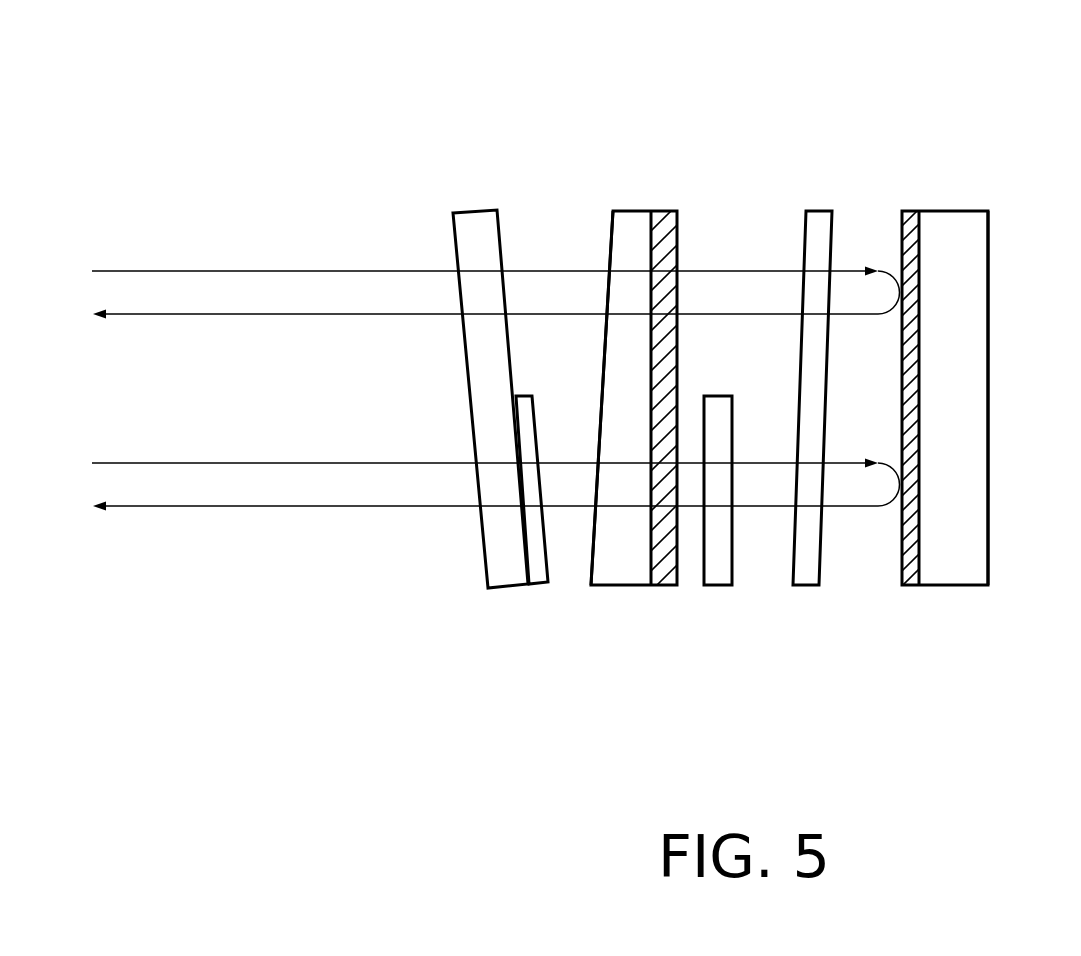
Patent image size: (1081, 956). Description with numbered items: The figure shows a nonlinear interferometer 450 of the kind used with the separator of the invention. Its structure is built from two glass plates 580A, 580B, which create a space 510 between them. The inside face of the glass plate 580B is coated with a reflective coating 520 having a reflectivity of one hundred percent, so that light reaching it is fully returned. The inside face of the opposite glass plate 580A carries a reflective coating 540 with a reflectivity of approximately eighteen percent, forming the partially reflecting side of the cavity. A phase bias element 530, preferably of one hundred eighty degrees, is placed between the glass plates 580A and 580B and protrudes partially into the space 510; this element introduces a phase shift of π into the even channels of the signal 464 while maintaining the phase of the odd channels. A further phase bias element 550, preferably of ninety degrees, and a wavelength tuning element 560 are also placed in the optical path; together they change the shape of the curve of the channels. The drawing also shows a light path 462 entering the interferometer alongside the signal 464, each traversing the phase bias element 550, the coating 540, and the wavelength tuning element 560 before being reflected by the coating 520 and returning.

The nonlinear interferometer 450 is at (812, 46).
The first optical beam 462 is at (197, 270).
The signal 464 is at (197, 463).
The space 510 is at (867, 390).
The reflective coating 520 is at (911, 196).
The phase bias element 530 is at (718, 602).
The reflective coating 540 is at (663, 196).
The phase bias element 550 is at (512, 603).
The wavelength tuning element 560 is at (817, 600).
The glass plate 580A is at (628, 210).
The glass plate 580B is at (958, 210).